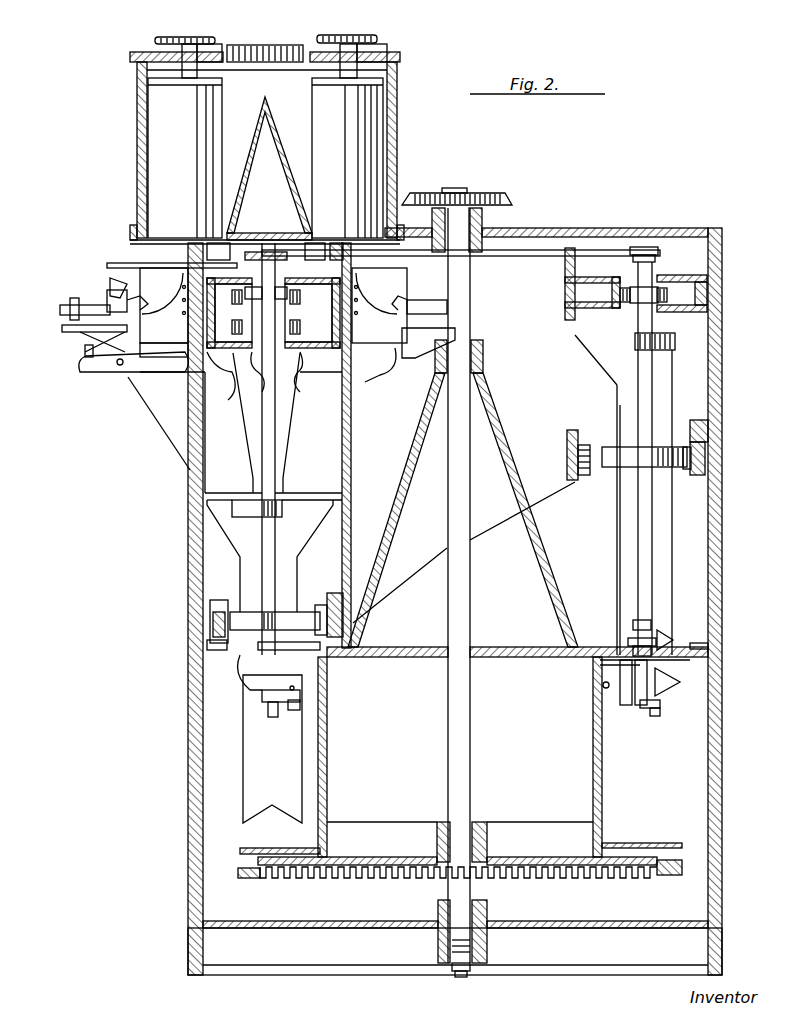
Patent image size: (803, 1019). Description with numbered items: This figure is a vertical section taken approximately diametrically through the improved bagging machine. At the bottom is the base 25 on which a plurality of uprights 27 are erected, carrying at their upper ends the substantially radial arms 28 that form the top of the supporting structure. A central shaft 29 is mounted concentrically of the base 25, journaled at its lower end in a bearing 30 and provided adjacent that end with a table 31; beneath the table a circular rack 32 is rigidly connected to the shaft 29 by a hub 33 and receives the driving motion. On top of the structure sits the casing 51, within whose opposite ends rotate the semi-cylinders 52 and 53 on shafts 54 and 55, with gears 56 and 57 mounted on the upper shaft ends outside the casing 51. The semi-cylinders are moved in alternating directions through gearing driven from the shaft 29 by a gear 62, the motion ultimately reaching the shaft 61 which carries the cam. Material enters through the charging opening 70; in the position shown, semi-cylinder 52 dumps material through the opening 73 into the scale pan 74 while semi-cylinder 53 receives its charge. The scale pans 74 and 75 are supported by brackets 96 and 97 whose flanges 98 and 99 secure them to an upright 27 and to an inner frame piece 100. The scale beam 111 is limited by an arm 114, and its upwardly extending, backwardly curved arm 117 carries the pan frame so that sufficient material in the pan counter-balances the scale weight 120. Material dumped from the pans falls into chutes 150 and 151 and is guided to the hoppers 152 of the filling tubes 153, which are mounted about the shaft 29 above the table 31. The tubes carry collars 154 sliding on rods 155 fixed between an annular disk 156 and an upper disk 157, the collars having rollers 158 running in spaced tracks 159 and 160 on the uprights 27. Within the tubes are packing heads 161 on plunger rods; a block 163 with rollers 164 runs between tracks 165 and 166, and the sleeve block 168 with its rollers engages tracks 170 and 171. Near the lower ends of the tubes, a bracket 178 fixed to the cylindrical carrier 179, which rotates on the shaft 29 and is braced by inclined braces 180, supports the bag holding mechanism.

The base 25 is at (255, 975).
The uprights 27 is at (188, 778).
The radial arms 28 is at (642, 230).
The shaft 29 is at (462, 773).
The bearing 30 is at (488, 946).
The table 31 is at (655, 836).
The circular rack 32 is at (668, 878).
The hub 33 is at (488, 835).
The casing 51 is at (137, 128).
The semi-cylinder 52 is at (192, 168).
The semi-cylinder 53 is at (356, 150).
The shaft 54 is at (185, 40).
The shaft 55 is at (380, 58).
The gear 56 is at (214, 38).
The gear 57 is at (358, 40).
The shaft 61 is at (275, 118).
The gear 62 is at (508, 198).
The charging opening 70 is at (268, 48).
The opening 73 is at (163, 240).
The scale pan 74 is at (164, 305).
The scale pan 75 is at (379, 305).
The bracket 96 is at (134, 346).
The bracket 97 is at (410, 349).
The flange 98 is at (142, 300).
The flange 99 is at (409, 302).
The inner frame piece 100 is at (352, 500).
The scale beam 111 is at (108, 308).
The arm 114 is at (90, 335).
The arm 117 is at (120, 282).
The scale weight 120 is at (68, 300).
The chute 150 is at (195, 432).
The chute 151 is at (308, 432).
The hoppers 152 is at (282, 510).
The filling tubes 153 is at (610, 540).
The collars 154 is at (240, 520).
The rods 155 is at (275, 568).
The annular disk 156 is at (605, 648).
The disk 157 is at (528, 257).
The rollers 158 is at (220, 608).
The track 159 is at (215, 640).
The track 160 is at (335, 660).
The packing heads 161 is at (666, 638).
The block 163 is at (240, 385).
The rollers 164 is at (233, 326).
The track 165 is at (220, 376).
The track 166 is at (277, 372).
The block 168 is at (665, 255).
The track 170 is at (668, 266).
The track 171 is at (618, 256).
The bracket 178 is at (325, 690).
The cylindrical carrier 179 is at (602, 752).
The inclined braces 180 is at (548, 583).